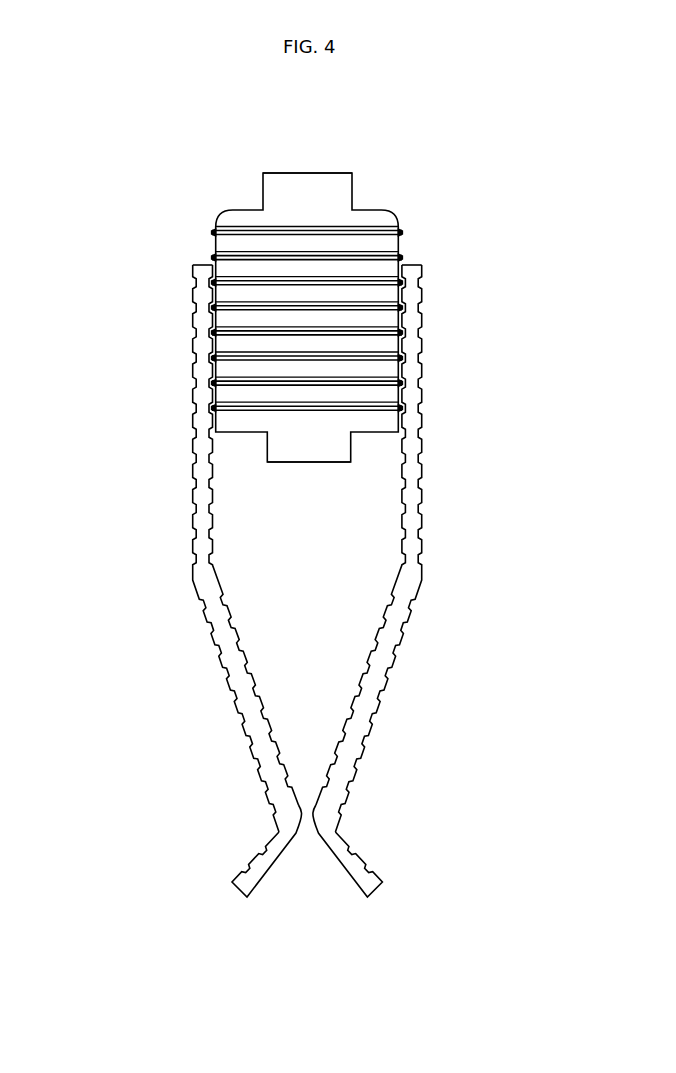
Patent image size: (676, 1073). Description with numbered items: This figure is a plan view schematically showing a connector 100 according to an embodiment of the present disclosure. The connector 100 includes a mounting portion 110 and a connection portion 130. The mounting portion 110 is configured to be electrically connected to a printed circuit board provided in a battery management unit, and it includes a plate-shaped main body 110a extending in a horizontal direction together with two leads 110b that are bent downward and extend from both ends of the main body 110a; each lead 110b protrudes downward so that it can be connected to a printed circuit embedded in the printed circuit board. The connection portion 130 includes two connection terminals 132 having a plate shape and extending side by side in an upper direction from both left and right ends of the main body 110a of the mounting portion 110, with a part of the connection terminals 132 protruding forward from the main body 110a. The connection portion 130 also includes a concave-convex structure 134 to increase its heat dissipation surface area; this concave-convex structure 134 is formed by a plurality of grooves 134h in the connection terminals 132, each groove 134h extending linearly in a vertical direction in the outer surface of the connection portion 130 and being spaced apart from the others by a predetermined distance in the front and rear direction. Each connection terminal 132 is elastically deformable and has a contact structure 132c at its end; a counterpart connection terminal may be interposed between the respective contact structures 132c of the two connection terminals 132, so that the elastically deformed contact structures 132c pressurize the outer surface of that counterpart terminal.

The connector 100 is at (165, 138).
The mounting portion 110 is at (290, 168).
The main body 110a is at (249, 240).
The lead 110b is at (322, 172).
The connection portion 130 is at (496, 382).
The connection terminal 132 is at (190, 368).
The contact structure 132c is at (310, 830).
The concave-convex structure 134 is at (119, 297).
The groove 134h is at (236, 302).